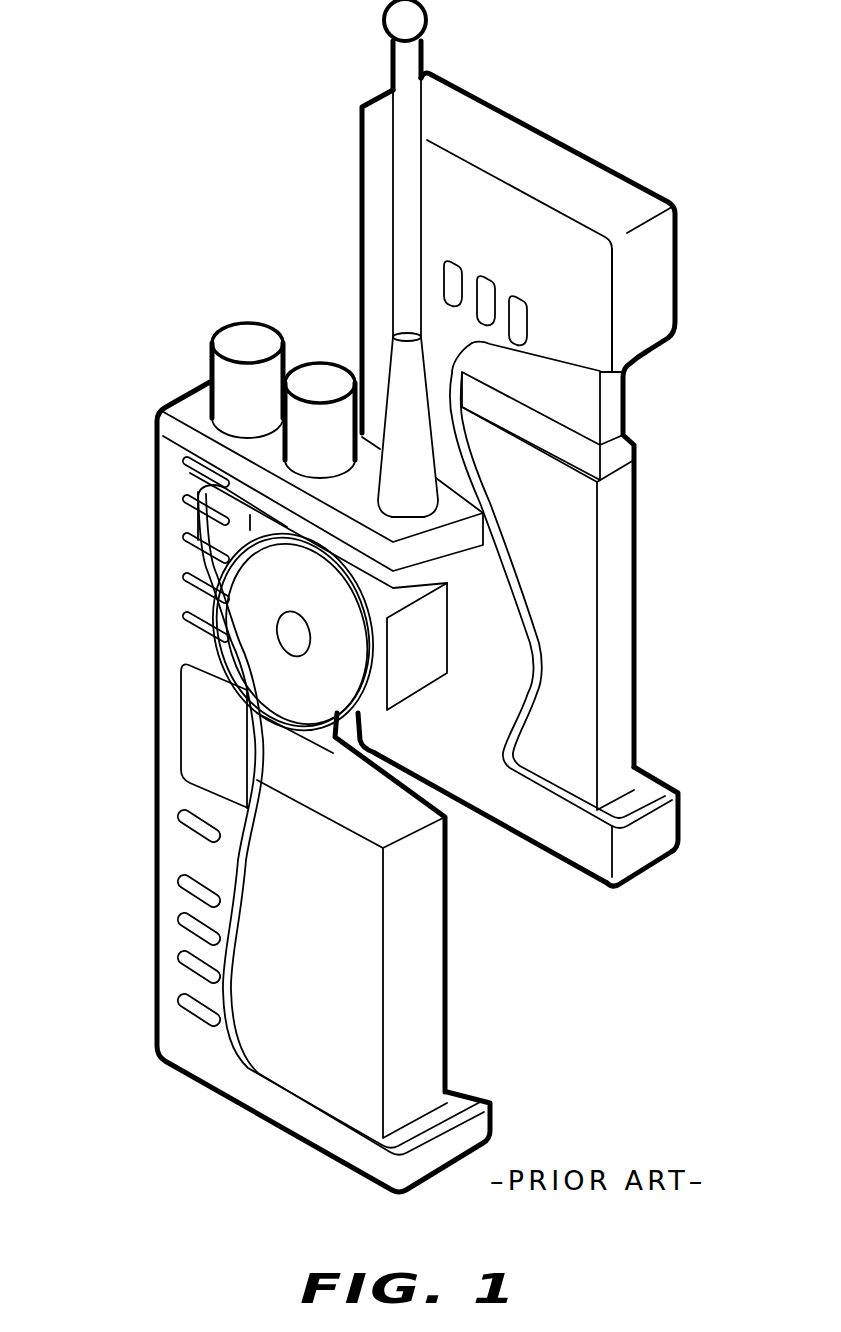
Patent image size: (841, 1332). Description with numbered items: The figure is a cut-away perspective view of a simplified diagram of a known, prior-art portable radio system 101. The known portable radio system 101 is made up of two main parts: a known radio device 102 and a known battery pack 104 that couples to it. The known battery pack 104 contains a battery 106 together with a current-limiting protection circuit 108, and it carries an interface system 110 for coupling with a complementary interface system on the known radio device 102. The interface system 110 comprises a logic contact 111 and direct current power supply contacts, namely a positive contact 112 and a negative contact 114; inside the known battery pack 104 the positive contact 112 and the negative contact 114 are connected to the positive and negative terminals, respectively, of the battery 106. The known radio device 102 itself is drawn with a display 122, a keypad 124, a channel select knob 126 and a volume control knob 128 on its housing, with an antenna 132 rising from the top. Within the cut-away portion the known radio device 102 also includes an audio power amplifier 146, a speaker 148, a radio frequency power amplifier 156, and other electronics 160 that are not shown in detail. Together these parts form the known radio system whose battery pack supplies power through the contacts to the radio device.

The known portable radio system 101 is at (379, 624).
The known radio device 102 is at (157, 770).
The known battery pack 104 is at (361, 146).
The battery 106 is at (636, 601).
The current-limiting protection circuit 108 is at (627, 389).
The interface system 110 is at (477, 276).
The logic contact 111 is at (511, 292).
The positive contact 112 is at (449, 255).
The negative contact 114 is at (541, 186).
The display 122 is at (200, 698).
The keypad 124 is at (178, 838).
The channel select knob 126 is at (321, 364).
The volume control knob 128 is at (224, 333).
The antenna 132 is at (383, 22).
The audio power amplifier 146 is at (240, 518).
The speaker 148 is at (352, 668).
The radio frequency power amplifier 156 is at (405, 672).
The other electronics 160 is at (447, 1008).